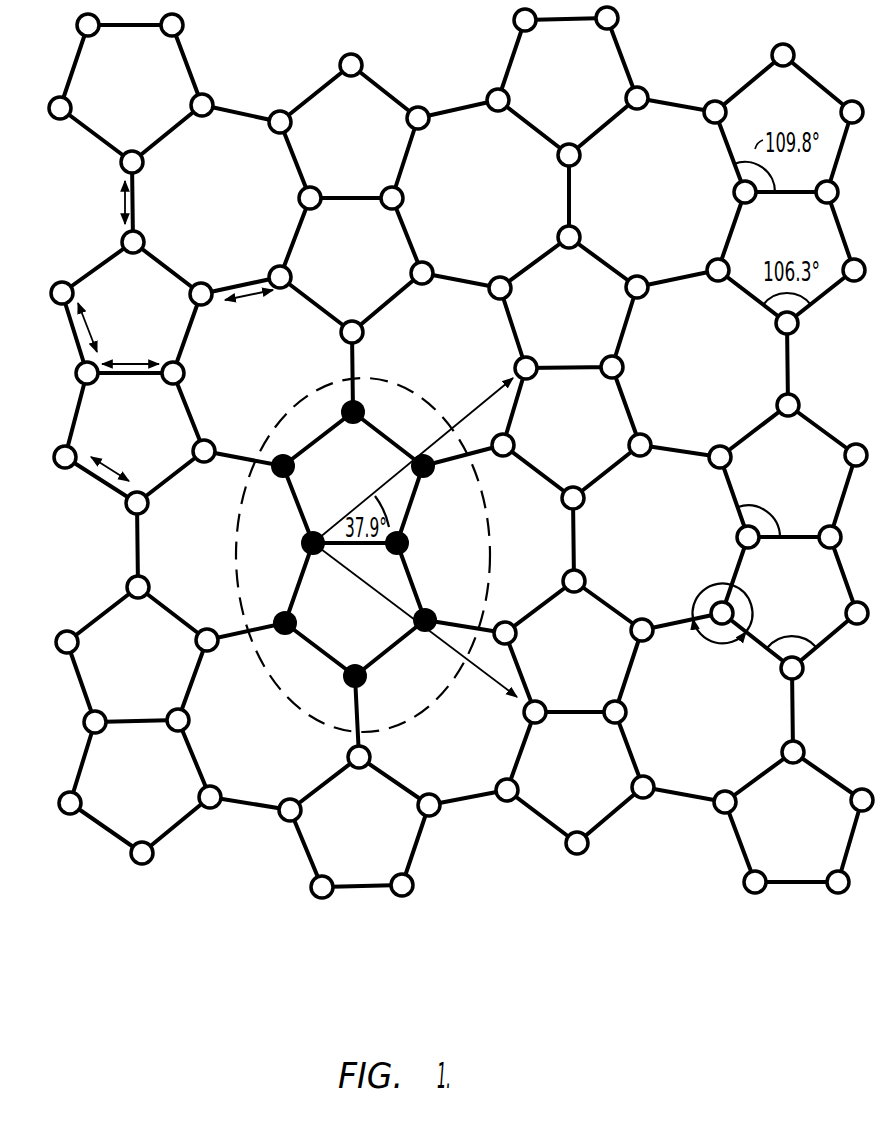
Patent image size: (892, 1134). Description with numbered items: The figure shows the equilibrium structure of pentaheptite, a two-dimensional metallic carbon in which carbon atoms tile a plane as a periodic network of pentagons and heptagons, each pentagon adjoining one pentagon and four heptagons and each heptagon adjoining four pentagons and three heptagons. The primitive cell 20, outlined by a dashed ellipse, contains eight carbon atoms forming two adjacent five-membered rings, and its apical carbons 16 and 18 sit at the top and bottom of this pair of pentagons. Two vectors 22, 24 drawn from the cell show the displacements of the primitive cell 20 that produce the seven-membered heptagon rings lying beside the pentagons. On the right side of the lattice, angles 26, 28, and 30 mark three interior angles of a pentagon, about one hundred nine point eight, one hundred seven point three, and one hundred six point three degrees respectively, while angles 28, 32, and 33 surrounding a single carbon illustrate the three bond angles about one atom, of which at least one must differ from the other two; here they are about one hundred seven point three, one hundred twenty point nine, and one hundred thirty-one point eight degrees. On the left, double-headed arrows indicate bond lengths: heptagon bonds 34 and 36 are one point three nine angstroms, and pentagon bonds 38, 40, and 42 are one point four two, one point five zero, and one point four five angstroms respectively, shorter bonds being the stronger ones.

The apical carbon 16 is at (372, 393).
The apical carbon 18 is at (369, 686).
The primitive cell 20 is at (282, 699).
The vector 22 is at (512, 380).
The vector 24 is at (515, 704).
The angle 26 is at (766, 505).
The angle 28 is at (750, 592).
The angle 30 is at (806, 632).
The angle 32 is at (731, 583).
The angle 33 is at (746, 646).
The heptagon bond 34 is at (235, 276).
The heptagon bond 36 is at (142, 201).
The pentagon bond 38 is at (82, 355).
The pentagon bond 40 is at (108, 496).
The pentagon bond 42 is at (122, 381).